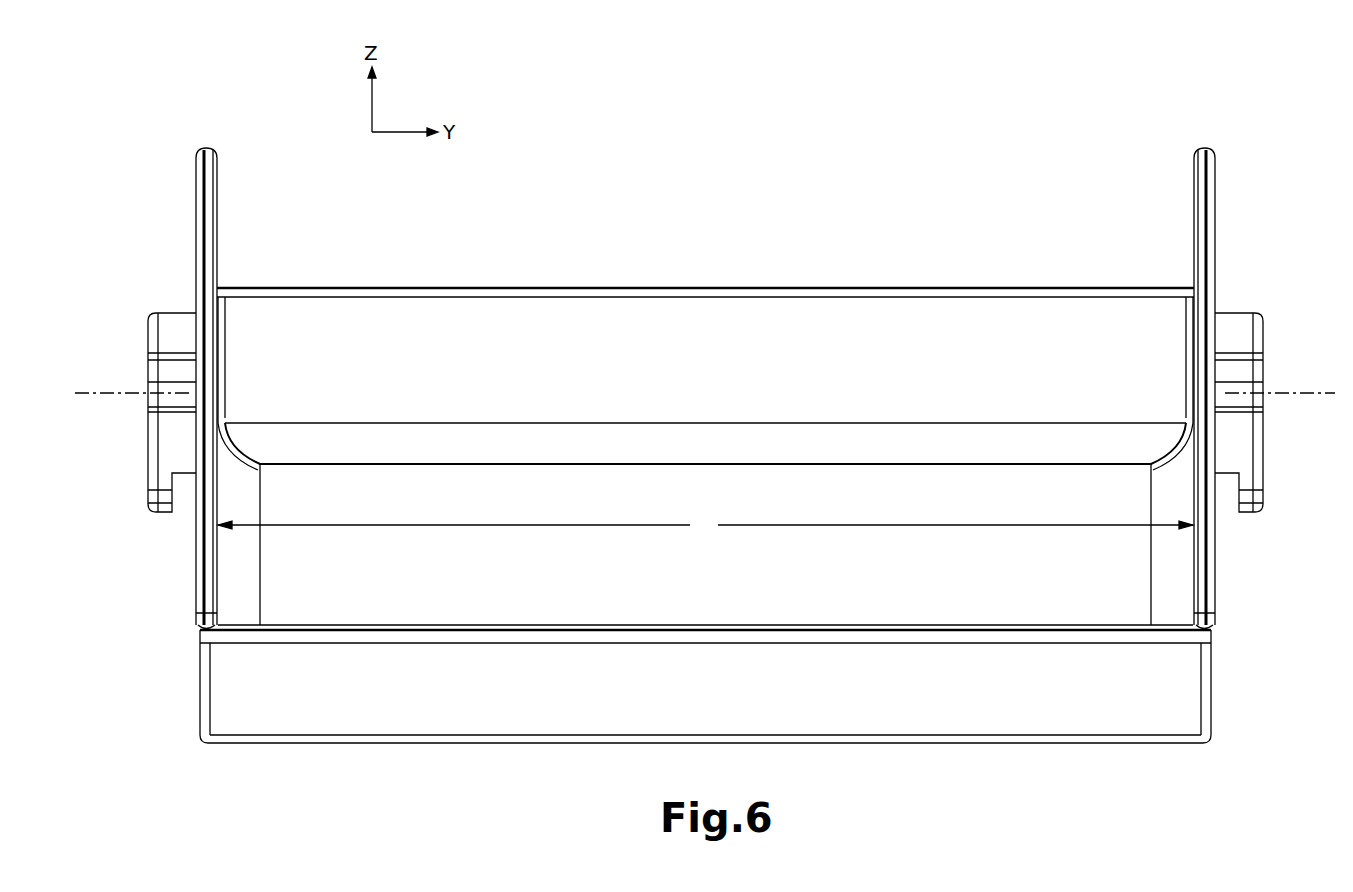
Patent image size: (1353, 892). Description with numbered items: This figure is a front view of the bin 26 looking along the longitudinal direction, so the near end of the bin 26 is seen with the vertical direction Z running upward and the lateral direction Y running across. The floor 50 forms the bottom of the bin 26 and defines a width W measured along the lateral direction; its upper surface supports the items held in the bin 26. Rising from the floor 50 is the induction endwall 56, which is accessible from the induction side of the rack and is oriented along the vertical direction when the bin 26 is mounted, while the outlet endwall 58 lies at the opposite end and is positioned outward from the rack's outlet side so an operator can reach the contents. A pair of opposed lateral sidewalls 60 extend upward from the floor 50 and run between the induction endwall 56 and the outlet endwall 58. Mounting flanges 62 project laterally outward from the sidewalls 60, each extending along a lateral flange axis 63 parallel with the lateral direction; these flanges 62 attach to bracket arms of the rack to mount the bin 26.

The bin 26 is at (705, 451).
The floor 50 is at (962, 492).
The induction endwall 56 is at (395, 328).
The outlet endwall 58 is at (968, 705).
The lateral sidewalls 60 is at (197, 188).
The mounting flanges 62 is at (148, 468).
The lateral flange axis 63 is at (104, 393).